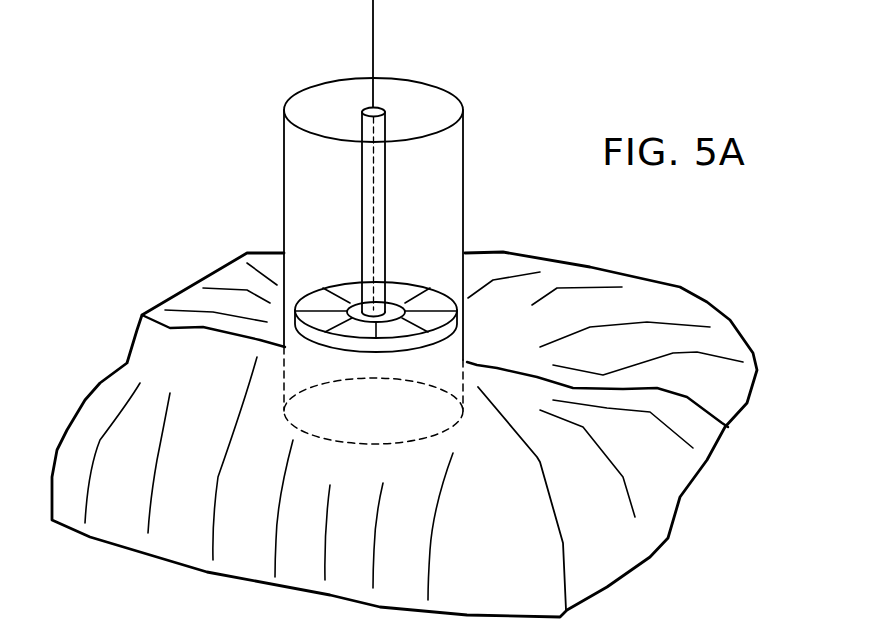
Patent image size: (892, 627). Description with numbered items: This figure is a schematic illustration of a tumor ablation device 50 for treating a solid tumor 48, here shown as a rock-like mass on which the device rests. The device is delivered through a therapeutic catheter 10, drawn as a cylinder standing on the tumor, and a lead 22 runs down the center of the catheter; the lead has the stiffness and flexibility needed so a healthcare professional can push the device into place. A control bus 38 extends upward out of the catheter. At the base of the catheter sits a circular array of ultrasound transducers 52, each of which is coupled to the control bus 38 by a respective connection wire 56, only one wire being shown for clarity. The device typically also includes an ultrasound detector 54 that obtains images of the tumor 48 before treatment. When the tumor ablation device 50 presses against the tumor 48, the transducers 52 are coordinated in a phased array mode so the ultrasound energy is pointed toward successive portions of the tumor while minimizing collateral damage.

The control bus 38 is at (373, 40).
The therapeutic catheter 10 is at (464, 147).
The lead 22 is at (387, 202).
The tumor ablation device 50 is at (473, 242).
The ultrasound detector 54 is at (349, 303).
The connection wire 56 is at (392, 320).
The ultrasound transducers 52 is at (428, 322).
The tumor 48 is at (707, 302).